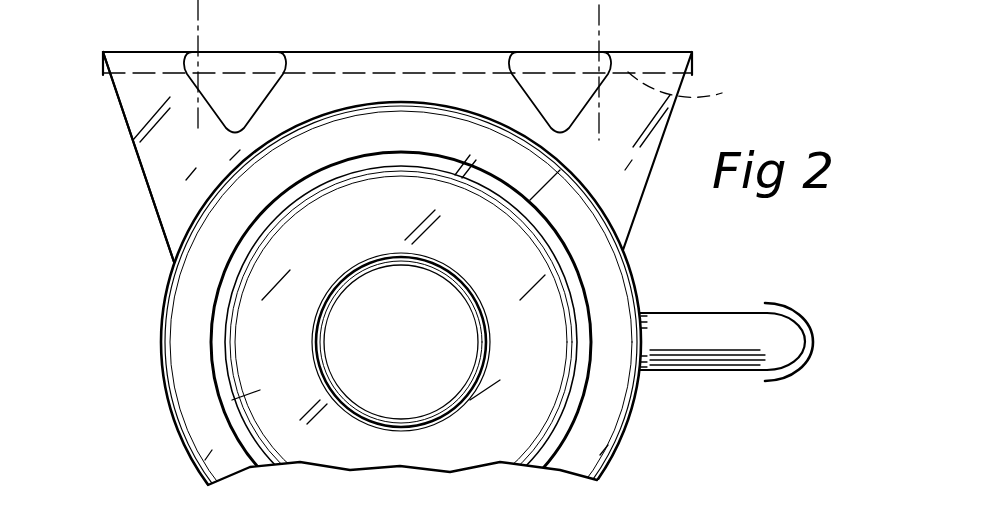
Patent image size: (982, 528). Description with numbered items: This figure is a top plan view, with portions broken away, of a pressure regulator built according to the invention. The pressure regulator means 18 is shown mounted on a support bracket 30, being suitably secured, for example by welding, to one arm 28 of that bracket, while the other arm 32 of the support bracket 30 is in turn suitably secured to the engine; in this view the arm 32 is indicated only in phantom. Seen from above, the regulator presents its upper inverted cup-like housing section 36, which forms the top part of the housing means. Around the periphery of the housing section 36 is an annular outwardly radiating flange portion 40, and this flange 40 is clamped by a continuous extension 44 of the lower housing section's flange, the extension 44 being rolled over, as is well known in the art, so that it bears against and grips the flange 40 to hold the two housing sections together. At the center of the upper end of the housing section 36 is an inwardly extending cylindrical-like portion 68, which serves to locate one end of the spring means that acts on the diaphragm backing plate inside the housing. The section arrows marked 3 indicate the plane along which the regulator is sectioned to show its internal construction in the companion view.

The section line 3- 3 is at (850, 342).
The pressure regulator means 18 is at (182, 447).
The arm of support bracket 28 is at (173, 214).
The support bracket 30 is at (143, 160).
The other arm of support bracket 32 is at (690, 97).
The upper inverted cup-like housing section 36 is at (218, 382).
The annular outwardly radiating flange portion 40 is at (572, 402).
The continuous extension 44 is at (610, 370).
The inwardly extending cylindrical-like portion 68 is at (328, 316).